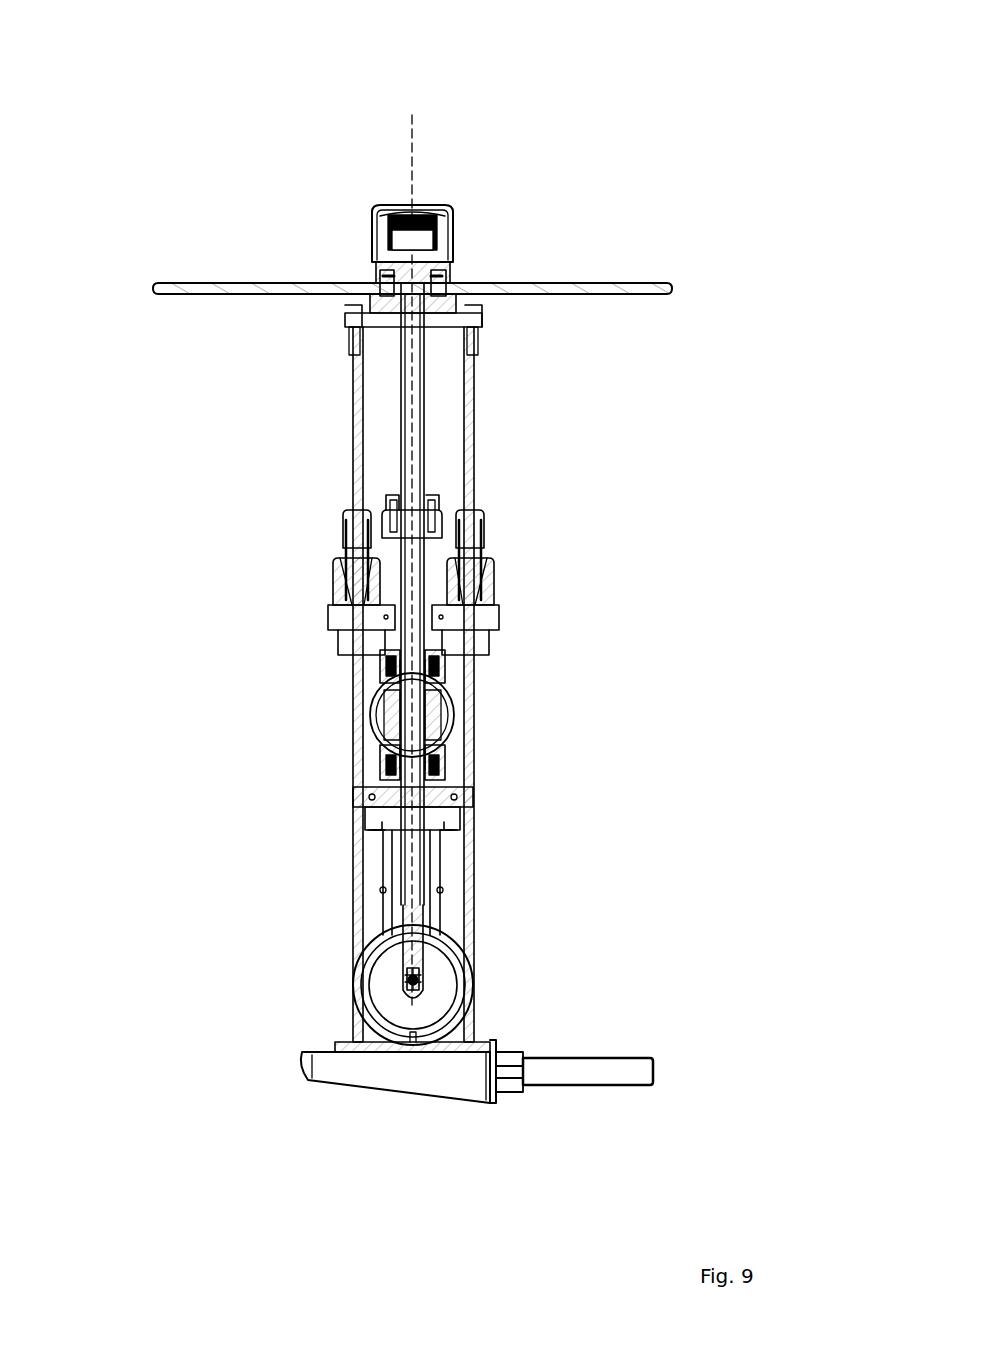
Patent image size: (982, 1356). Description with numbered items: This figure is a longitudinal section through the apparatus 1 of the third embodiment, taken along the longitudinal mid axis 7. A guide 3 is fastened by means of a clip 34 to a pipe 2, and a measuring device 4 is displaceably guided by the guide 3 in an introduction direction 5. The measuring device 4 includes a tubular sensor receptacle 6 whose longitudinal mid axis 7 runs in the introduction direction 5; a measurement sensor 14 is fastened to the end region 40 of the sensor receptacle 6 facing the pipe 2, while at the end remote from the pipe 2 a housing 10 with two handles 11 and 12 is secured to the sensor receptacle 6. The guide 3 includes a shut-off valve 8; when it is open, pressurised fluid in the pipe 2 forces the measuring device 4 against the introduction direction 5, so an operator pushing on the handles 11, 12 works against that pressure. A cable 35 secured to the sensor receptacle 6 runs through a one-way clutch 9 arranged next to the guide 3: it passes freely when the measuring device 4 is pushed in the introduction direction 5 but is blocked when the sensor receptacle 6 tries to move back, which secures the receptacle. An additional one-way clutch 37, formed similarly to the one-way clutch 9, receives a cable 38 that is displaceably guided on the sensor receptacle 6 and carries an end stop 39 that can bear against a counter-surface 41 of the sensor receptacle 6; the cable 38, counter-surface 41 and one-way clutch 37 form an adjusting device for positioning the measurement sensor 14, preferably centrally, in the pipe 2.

The apparatus 1 is at (100, 76).
The pipe 2 is at (452, 945).
The guide 3 is at (425, 552).
The measuring device 4 is at (348, 190).
The introduction direction 5 is at (645, 408).
The sensor receptacle 6 is at (424, 388).
The longitudinal mid axis 7 is at (413, 150).
The shut-off valve 8 is at (446, 715).
The one-way clutch 9 is at (338, 570).
The housing 10 is at (455, 232).
The handle 11 is at (595, 286).
The handle 12 is at (190, 294).
The measurement sensor 14 is at (421, 988).
The clip 34 is at (388, 1020).
The cable 35 is at (352, 408).
The additional one-way clutch 37 is at (487, 573).
The cable 38 is at (468, 443).
The end stop 39 is at (472, 296).
The end region 40 is at (382, 1008).
The counter-surface 41 is at (482, 312).